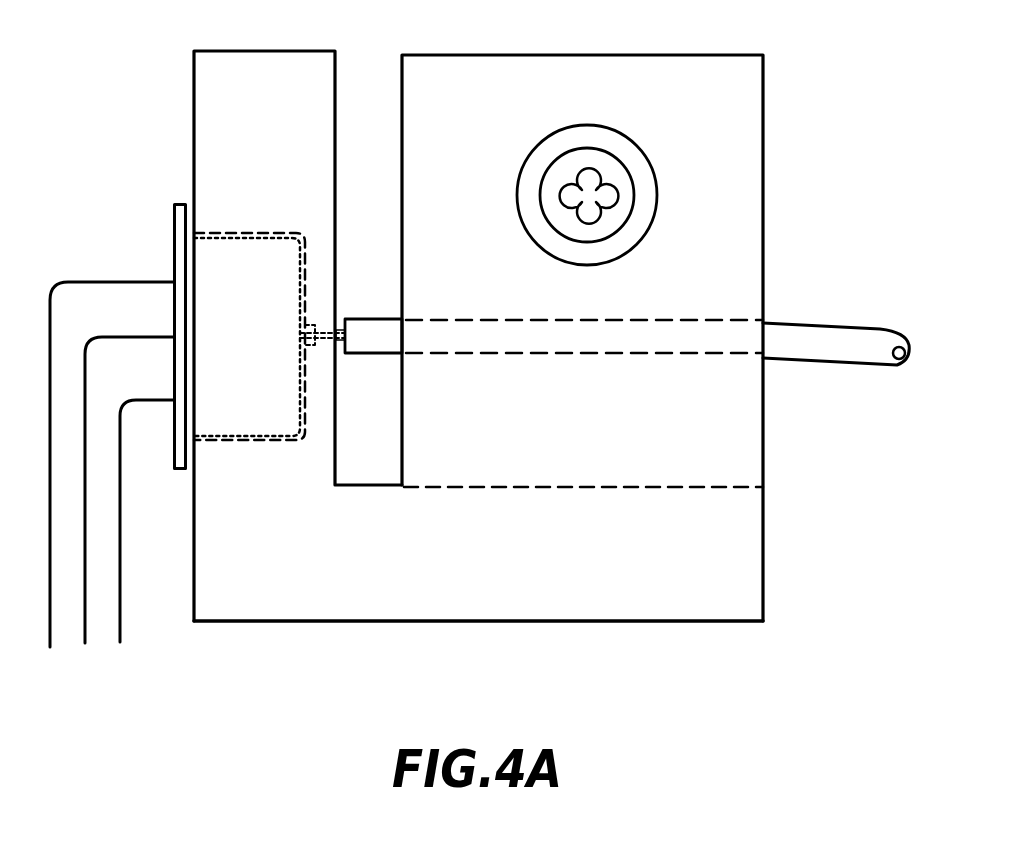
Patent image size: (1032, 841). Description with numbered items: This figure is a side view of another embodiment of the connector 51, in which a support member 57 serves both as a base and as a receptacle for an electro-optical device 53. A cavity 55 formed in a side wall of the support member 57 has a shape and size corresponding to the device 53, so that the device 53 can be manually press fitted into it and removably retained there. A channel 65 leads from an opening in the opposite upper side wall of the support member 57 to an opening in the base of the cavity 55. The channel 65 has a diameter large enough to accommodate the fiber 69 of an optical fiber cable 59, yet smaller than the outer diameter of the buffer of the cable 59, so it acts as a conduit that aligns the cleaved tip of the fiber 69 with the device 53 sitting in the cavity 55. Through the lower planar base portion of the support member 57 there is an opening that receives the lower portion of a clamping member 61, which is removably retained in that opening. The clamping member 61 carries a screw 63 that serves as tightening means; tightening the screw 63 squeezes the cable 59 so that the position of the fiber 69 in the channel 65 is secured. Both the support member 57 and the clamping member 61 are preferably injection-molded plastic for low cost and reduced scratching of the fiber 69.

The connector 51 is at (509, 634).
The electro-optical device 53 is at (172, 267).
The cavity 55 is at (303, 232).
The support member 57 is at (262, 594).
The optical fiber cable 59 is at (813, 318).
The clamping member 61 is at (734, 180).
The screw 63 is at (603, 150).
The channel 65 is at (317, 334).
The fiber 69 is at (322, 342).